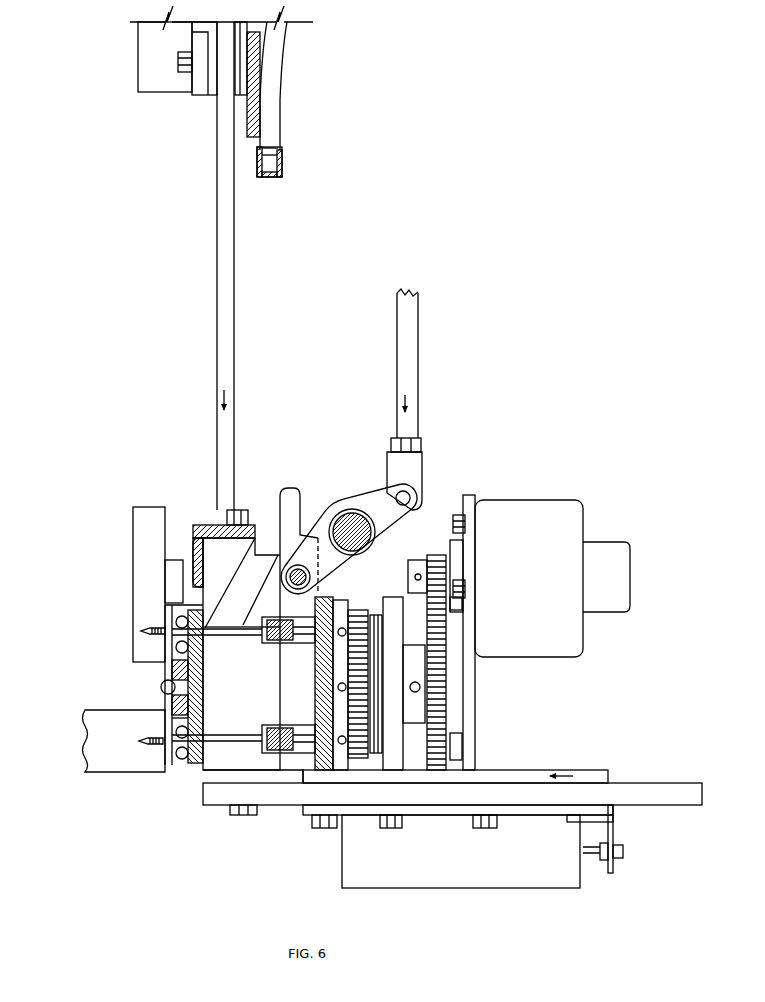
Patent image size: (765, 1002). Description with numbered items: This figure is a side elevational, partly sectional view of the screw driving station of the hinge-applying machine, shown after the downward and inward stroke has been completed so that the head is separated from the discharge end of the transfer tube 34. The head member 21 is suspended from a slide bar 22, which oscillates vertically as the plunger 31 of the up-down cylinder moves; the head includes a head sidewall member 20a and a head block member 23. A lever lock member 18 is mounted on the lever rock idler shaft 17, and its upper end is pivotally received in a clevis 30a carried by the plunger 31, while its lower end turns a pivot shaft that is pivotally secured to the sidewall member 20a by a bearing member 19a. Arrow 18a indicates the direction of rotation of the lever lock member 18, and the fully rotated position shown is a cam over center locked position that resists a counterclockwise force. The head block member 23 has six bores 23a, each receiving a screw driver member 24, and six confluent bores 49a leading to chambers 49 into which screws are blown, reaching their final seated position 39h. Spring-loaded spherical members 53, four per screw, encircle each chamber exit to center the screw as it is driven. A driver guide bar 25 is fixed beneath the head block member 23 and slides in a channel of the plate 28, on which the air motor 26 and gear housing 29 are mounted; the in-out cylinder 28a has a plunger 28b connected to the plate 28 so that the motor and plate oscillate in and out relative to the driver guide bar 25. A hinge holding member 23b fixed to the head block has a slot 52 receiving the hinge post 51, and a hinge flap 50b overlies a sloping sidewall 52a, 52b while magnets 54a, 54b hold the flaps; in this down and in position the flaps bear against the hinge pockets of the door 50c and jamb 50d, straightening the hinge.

The lever rock idler shaft 17 is at (362, 550).
The lever lock member 18 is at (409, 508).
The arrow 18a is at (382, 512).
The bearing member 19a is at (309, 577).
The head sidewall member 20a is at (316, 683).
The head member 21 is at (270, 530).
The slide bar 22 is at (235, 362).
The head block member 23 is at (253, 705).
The bores 23a is at (240, 625).
The hinge holding member 23b is at (192, 775).
The screw driver member 24 is at (262, 740).
The driver guide bar 25 is at (700, 783).
The air motor 26 is at (585, 520).
The plate 28 is at (577, 770).
The in-out cylinder 28a is at (600, 862).
The plunger 28b is at (596, 850).
The gear housing 29 is at (424, 555).
The clevis 30a is at (423, 466).
The plunger 31 is at (419, 363).
The transfer tube 34 is at (285, 78).
The final seated position 39h is at (142, 628).
The chamber 49 is at (220, 635).
The bore 49a is at (248, 571).
The hinge flap 50b is at (160, 730).
The door 50c is at (85, 710).
The jamb 50d is at (133, 545).
The post 51 is at (160, 687).
The slot 52 is at (210, 688).
The sloping sidewall 52a is at (168, 682).
The sloping sidewall 52b is at (168, 705).
The spring-loaded spherical members 53 is at (170, 719).
The magnet 54a is at (192, 672).
The magnet 54b is at (188, 735).